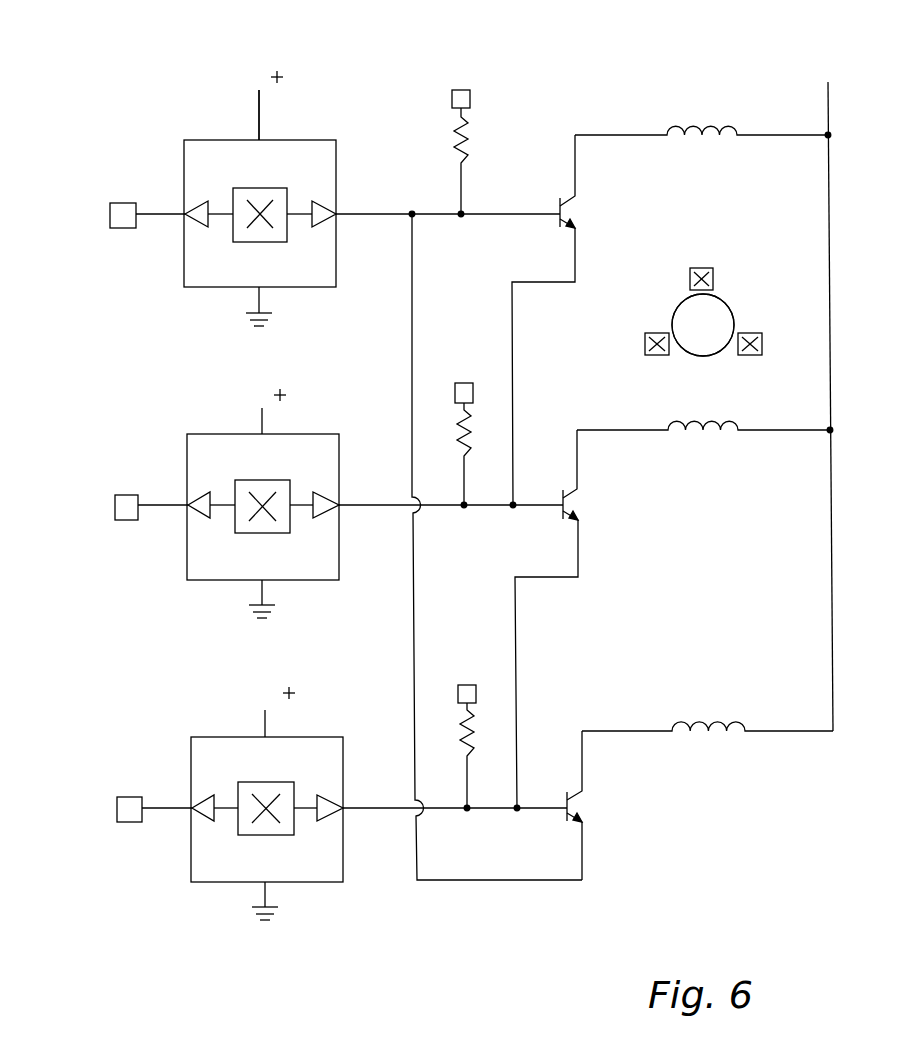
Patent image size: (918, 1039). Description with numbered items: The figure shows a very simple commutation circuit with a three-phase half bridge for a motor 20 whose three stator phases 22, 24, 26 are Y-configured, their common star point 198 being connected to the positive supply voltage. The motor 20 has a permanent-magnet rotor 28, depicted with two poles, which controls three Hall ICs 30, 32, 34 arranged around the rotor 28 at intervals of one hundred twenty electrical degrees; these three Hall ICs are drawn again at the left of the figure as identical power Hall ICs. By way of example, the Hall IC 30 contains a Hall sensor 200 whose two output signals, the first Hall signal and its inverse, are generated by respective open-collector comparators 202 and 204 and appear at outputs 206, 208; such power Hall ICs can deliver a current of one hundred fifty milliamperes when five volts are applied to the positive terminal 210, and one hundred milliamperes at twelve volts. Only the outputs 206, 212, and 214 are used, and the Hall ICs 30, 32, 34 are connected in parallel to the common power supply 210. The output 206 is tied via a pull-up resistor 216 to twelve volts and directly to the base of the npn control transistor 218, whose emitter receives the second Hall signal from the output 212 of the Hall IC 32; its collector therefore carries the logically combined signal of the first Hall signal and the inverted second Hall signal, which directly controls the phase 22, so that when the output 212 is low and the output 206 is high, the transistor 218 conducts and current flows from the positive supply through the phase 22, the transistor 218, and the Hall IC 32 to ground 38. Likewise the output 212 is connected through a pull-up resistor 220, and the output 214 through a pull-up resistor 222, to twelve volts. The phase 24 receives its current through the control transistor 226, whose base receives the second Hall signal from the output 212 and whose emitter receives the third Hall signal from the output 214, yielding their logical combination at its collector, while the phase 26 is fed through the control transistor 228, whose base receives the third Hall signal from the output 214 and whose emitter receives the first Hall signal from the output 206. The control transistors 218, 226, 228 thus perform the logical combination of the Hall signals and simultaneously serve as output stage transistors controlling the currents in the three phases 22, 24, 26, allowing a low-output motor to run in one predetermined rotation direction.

The motor 20 is at (655, 216).
The phase 22 is at (707, 130).
The phase 24 is at (705, 432).
The phase 26 is at (706, 733).
The permanent-magnet rotor 28 is at (730, 306).
The Hall IC 30 is at (318, 140).
The Hall IC 32 is at (755, 356).
The Hall IC 34 is at (654, 356).
The ground 38 is at (262, 328).
The star point 198 is at (828, 174).
The Hall sensor 200 is at (242, 188).
The comparator 202 is at (328, 186).
The comparator 204 is at (196, 204).
The output 206 is at (358, 216).
The output 208 is at (124, 230).
The positive terminal 210 is at (259, 120).
The output 212 is at (360, 508).
The output 214 is at (362, 811).
The pull-up resistor 216 is at (466, 140).
The control transistor 218 is at (560, 200).
The pull-up resistor 220 is at (468, 428).
The pull-up resistor 222 is at (472, 728).
The control transistor 226 is at (564, 510).
The control transistor 228 is at (568, 810).